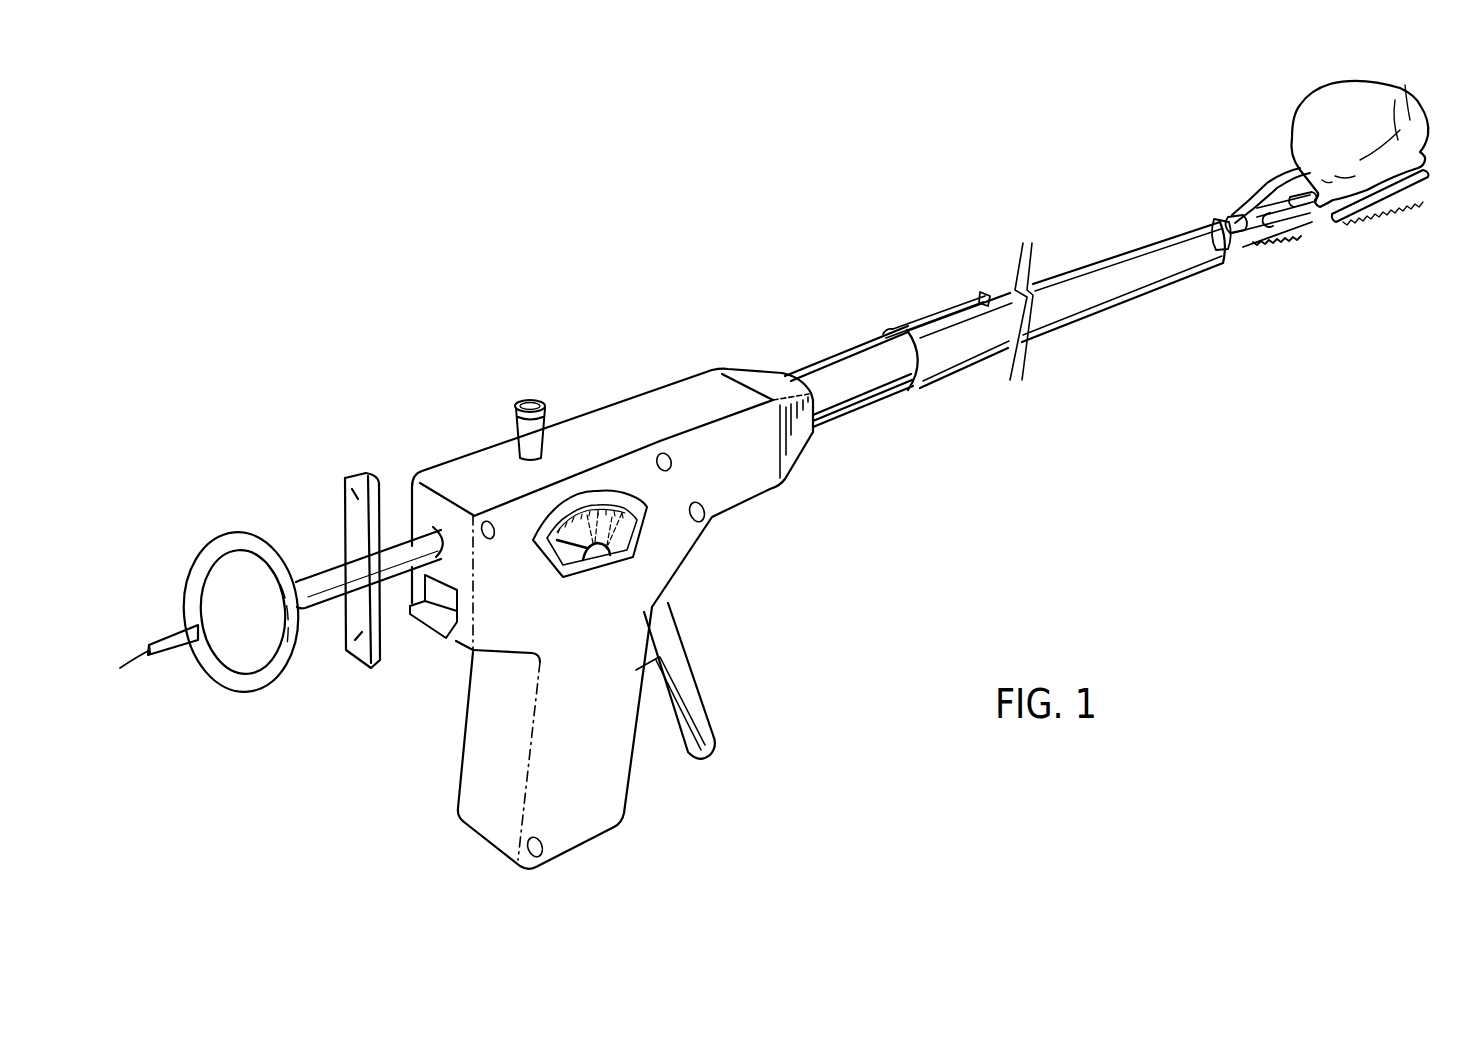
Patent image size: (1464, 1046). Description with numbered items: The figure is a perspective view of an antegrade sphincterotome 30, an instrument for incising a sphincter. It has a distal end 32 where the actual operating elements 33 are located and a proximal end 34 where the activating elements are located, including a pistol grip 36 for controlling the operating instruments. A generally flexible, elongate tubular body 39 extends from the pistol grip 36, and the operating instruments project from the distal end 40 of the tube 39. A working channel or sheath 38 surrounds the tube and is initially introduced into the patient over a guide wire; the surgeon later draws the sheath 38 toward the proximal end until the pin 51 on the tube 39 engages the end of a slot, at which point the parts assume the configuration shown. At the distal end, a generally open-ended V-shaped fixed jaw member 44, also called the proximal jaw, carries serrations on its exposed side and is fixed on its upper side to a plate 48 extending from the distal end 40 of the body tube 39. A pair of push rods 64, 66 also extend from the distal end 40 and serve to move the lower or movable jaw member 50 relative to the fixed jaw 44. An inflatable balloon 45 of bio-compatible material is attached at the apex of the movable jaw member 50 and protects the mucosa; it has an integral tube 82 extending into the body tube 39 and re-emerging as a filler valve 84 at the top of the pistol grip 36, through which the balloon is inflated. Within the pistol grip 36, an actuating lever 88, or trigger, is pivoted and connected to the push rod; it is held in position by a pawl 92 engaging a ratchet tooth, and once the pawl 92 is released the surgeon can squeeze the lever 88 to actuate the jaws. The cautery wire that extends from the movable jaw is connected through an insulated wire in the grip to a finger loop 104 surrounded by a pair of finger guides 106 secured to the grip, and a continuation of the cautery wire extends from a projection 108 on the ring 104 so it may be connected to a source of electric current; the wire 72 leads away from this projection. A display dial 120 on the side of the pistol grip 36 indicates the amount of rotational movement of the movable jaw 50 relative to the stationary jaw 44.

The antegrade sphincterotome 30 is at (750, 203).
The distal end 32 is at (1417, 92).
The operating elements 33 is at (1357, 255).
The proximal end 34 is at (250, 395).
The pistol grip 36 is at (600, 662).
The sheath 38 is at (1085, 258).
The tubular body 39 is at (836, 346).
The distal end of the tube 40 is at (1215, 215).
The fixed jaw member 44 is at (1314, 226).
The inflatable balloon 45 is at (1373, 141).
The plate 48 is at (1265, 220).
The movable jaw member 50 is at (1395, 192).
The pin 51 is at (982, 292).
The push rod 64 is at (1290, 236).
The push rod 66 is at (1240, 213).
The wire 72 is at (137, 658).
The integral tube 82 is at (1273, 177).
The filler valve 84 is at (516, 420).
The actuating lever 88 is at (658, 641).
The pawl 92 is at (433, 620).
The finger loop 104 is at (238, 533).
The finger guides 106 is at (347, 502).
The projection 108 is at (170, 633).
The display dial 120 is at (617, 487).